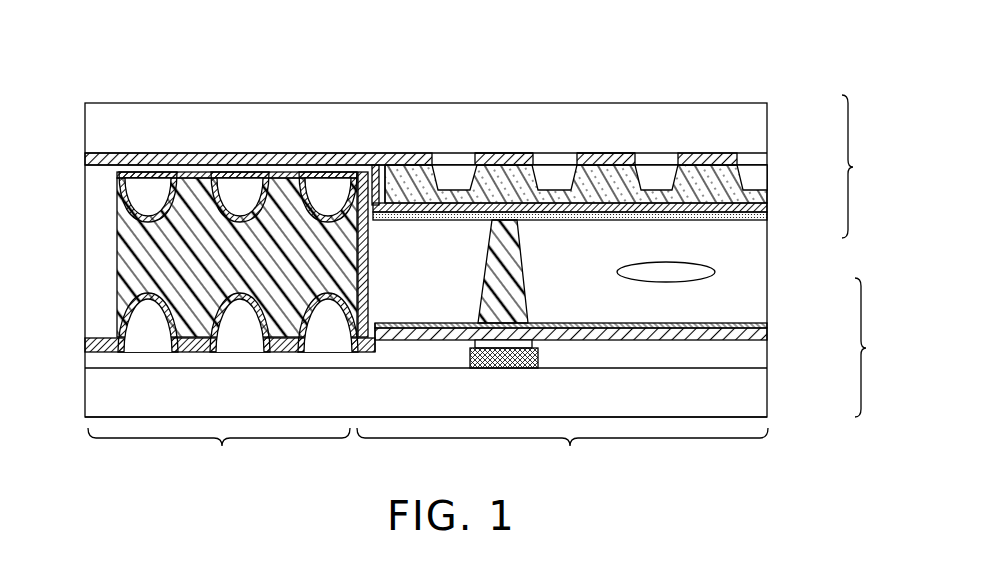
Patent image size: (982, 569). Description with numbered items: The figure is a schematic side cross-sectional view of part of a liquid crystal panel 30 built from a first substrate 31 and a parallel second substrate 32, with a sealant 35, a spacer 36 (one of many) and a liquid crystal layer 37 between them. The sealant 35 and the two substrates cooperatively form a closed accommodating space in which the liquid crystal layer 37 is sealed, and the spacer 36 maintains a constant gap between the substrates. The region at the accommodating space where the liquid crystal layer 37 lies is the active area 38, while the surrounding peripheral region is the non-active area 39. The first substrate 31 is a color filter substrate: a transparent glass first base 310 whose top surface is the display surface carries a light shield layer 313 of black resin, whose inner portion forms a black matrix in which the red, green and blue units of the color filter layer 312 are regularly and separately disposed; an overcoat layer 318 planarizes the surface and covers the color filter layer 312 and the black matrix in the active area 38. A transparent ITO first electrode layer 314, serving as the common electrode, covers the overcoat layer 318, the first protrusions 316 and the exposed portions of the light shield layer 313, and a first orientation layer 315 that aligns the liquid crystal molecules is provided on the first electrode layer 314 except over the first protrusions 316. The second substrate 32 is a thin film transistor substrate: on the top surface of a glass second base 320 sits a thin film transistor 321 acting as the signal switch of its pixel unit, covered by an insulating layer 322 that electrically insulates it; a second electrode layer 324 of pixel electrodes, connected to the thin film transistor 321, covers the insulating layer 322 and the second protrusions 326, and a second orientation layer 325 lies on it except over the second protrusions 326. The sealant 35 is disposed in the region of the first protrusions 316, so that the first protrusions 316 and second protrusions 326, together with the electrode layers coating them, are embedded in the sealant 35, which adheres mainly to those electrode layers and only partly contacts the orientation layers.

The liquid crystal panel 30 is at (320, 26).
The first substrate 31 is at (867, 166).
The second substrate 32 is at (881, 347).
The sealant 35 is at (130, 265).
The spacers 36 is at (515, 275).
The liquid crystal layer 37 is at (748, 272).
The active area 38 is at (562, 453).
The non-active area 39 is at (219, 455).
The first base 310 is at (213, 125).
The color filter layer 312 is at (668, 165).
The light shield layer 313 is at (722, 153).
The first electrode layer 314 is at (752, 209).
The first orientation layer 315 is at (752, 221).
The first protrusions 316 is at (147, 190).
The overcoat layer 318 is at (597, 153).
The second base 320 is at (747, 403).
The thin film transistor 321 is at (475, 340).
The insulating layer 322 is at (747, 357).
The second electrode layer 324 is at (750, 338).
The second orientation layer 325 is at (750, 323).
The second protrusions 326 is at (150, 343).